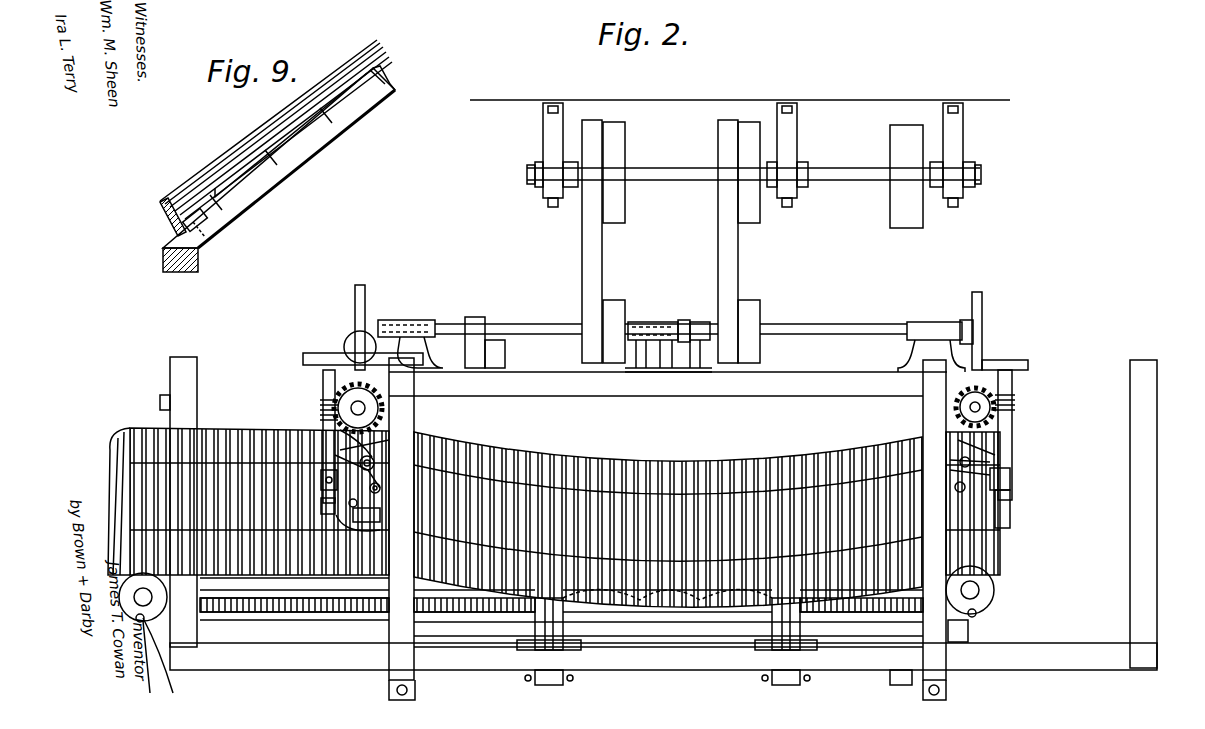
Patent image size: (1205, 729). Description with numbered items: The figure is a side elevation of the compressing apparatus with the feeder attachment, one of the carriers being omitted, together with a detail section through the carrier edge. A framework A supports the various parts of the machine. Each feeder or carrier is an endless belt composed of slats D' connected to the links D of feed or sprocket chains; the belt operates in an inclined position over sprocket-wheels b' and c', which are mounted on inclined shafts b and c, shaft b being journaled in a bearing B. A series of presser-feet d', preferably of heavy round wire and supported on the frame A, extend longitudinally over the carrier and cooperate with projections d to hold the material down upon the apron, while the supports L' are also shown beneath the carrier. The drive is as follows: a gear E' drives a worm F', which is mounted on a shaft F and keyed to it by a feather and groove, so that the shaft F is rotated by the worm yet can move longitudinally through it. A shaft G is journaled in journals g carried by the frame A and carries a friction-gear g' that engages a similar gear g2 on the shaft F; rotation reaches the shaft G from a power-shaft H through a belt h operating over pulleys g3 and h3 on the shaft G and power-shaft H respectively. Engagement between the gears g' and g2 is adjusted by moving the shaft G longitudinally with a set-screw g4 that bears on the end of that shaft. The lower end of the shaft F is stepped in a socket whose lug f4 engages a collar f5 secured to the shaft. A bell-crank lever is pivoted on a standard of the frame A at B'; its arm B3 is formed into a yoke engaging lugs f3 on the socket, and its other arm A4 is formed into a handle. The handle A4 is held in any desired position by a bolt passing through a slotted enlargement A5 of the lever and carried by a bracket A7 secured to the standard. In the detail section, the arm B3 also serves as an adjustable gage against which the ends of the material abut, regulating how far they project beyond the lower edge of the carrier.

In FIG. 2, the power-shaft H is at (661, 170).
In FIG. 2, the belt h is at (582, 254).
In FIG. 2, the pulley h3 is at (582, 212).
In FIG. 2, the pulley g3 is at (613, 307).
In FIG. 2, the shaft G is at (525, 330).
In FIG. 2, the journals g is at (675, 317).
In FIG. 2, the set-screw g4 is at (690, 324).
In FIG. 2, the friction-gear g' is at (651, 321).
In FIG. 2, the friction-gear g2 is at (312, 358).
In FIG. 9, the framework A is at (186, 272).
In FIG. 2, the framework A is at (541, 393).
In FIG. 2, the projections d is at (228, 501).
In FIG. 2, the presser-feet d' is at (707, 513).
In FIG. 9, the links D is at (277, 144).
In FIG. 2, the links D is at (561, 612).
In FIG. 2, the support L' is at (667, 624).
In FIG. 2, the inclined shaft c is at (143, 645).
In FIG. 2, the sprocket-wheel c' is at (166, 660).
In FIG. 2, the sprocket-wheel b' is at (994, 590).
In FIG. 2, the inclined shaft b is at (993, 619).
In FIG. 2, the bearing B is at (670, 557).
In FIG. 2, the pivot B' is at (391, 487).
In FIG. 9, the arm B3 is at (165, 220).
In FIG. 2, the arm B3 is at (350, 522).
In FIG. 2, the gear E' is at (649, 384).
In FIG. 2, the worm F' is at (646, 436).
In FIG. 2, the lug f4 is at (330, 432).
In FIG. 2, the shaft F is at (320, 451).
In FIG. 2, the lugs f3 is at (322, 480).
In FIG. 2, the slats D' is at (285, 462).
In FIG. 2, the collar f5 is at (380, 518).
In FIG. 2, the handle A4 is at (372, 455).
In FIG. 2, the slotted enlargement A5 is at (385, 462).
In FIG. 2, the bracket A7 is at (992, 462).